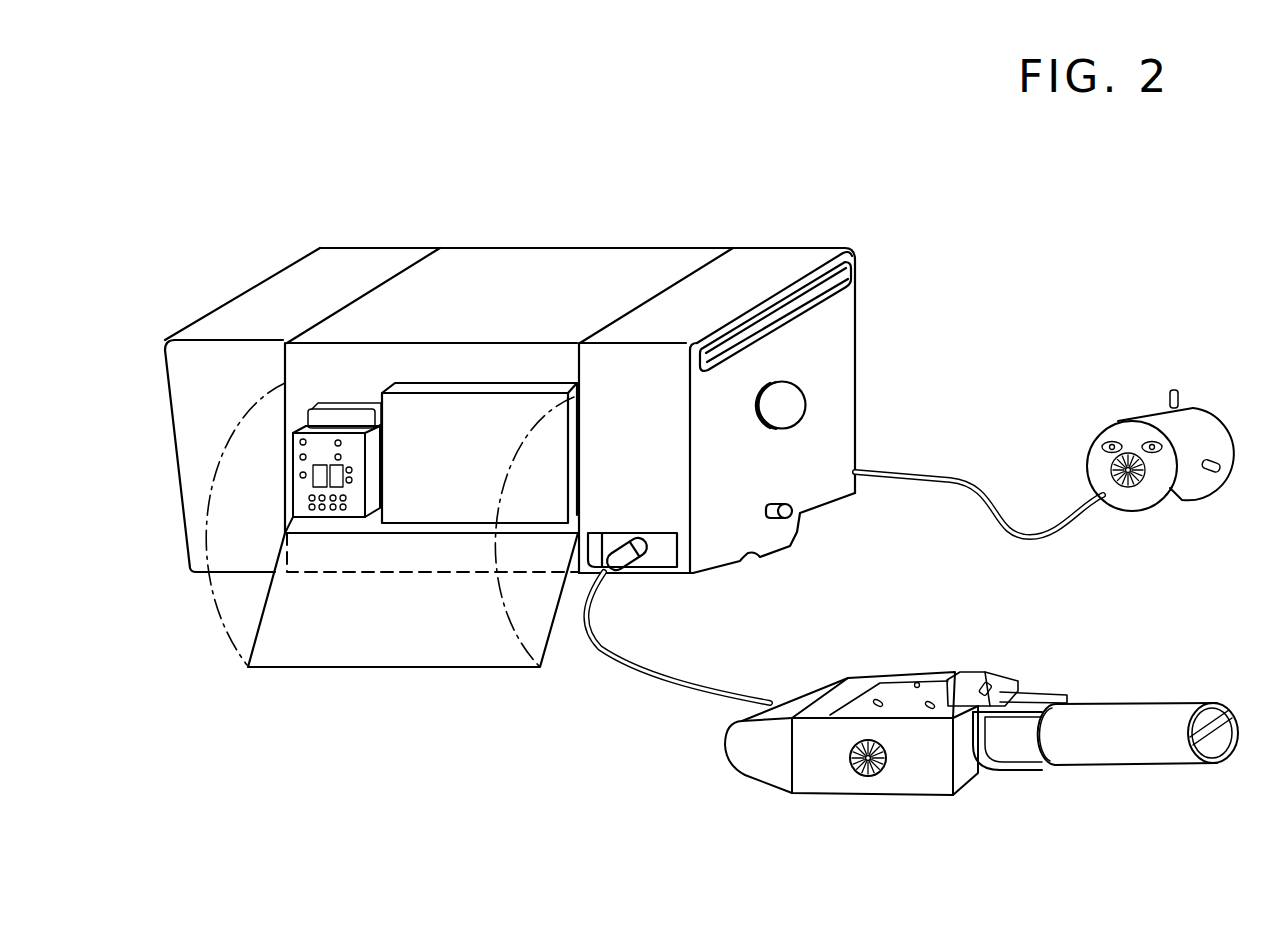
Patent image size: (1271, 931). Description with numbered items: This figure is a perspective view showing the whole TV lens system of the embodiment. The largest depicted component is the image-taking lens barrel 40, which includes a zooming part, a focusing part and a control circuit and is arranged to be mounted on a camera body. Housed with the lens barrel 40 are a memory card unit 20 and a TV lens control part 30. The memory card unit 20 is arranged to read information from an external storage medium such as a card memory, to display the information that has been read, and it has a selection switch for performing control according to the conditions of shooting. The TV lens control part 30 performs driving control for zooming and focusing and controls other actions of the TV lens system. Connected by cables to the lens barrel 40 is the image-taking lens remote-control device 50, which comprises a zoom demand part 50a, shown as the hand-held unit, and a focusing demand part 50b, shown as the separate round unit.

The memory card unit 20 is at (303, 488).
The TV lens control part 30 is at (447, 511).
The image-taking lens barrel 40 is at (613, 263).
The image-taking lens remote-control device 50 is at (1178, 580).
The zoom demand part 50a is at (872, 785).
The focusing demand part 50b is at (1130, 500).